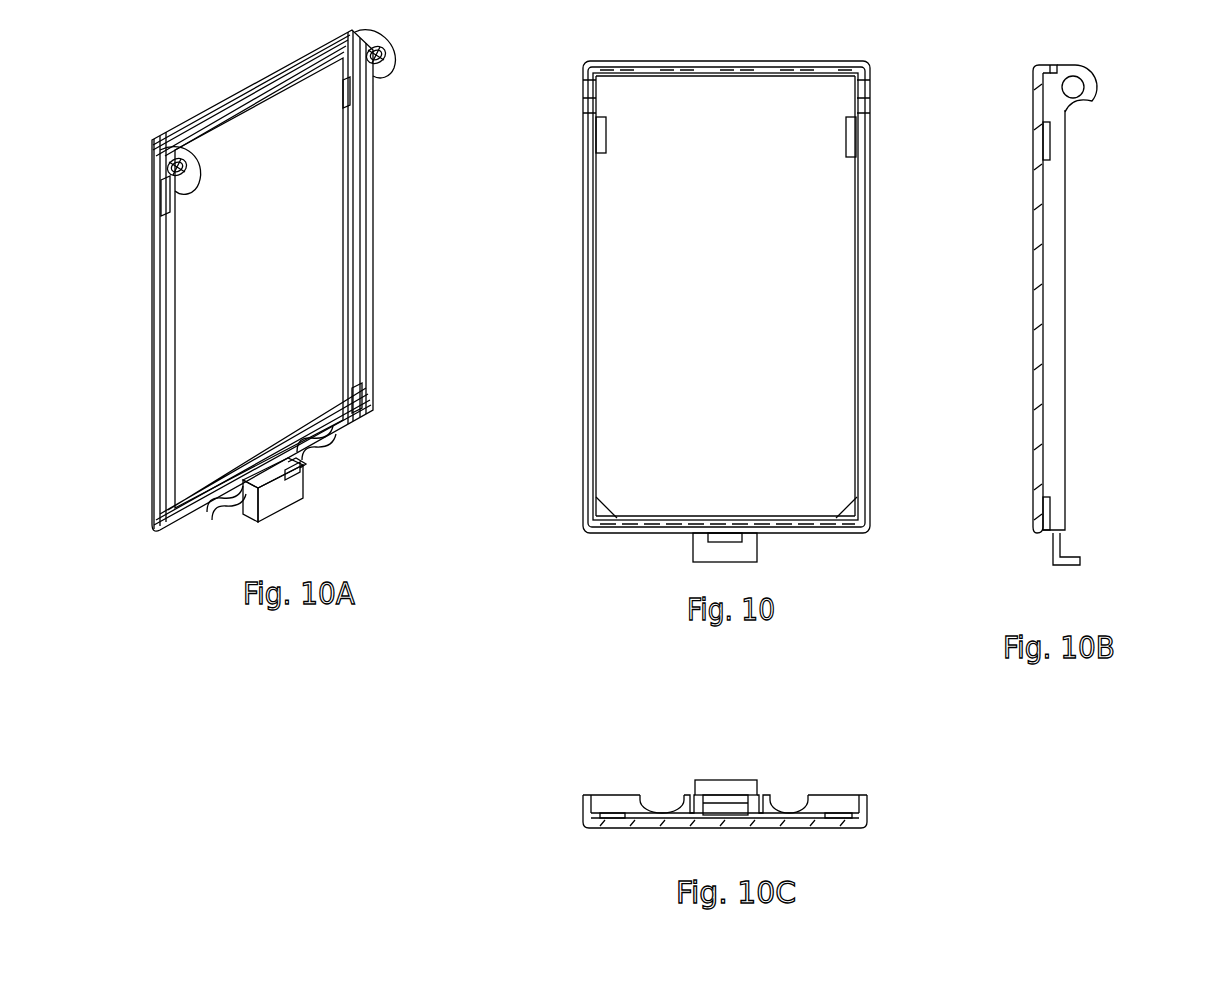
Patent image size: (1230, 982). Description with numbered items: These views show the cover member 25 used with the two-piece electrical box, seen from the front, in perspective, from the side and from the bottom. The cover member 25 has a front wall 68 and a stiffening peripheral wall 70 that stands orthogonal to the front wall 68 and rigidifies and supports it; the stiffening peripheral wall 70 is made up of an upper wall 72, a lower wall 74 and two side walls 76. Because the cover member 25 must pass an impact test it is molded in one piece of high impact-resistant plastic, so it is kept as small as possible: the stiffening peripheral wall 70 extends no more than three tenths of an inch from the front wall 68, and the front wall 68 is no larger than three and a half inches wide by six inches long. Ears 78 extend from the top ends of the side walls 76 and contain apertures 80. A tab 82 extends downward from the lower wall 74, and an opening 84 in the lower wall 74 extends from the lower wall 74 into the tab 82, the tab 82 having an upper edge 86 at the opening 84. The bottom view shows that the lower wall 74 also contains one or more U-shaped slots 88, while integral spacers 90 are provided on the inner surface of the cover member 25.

In FIG. 10A, the cover member 25 is at (124, 293).
In FIG. 10, the cover member 25 is at (547, 303).
In FIG. 10B, the cover member 25 is at (1007, 319).
In FIG. 10C, the cover member 25 is at (746, 744).
In FIG. 10, the front wall 68 is at (705, 279).
In FIG. 10B, the front wall 68 is at (1040, 196).
In FIG. 10C, the front wall 68 is at (660, 822).
In FIG. 10A, the stiffening peripheral wall 70 is at (160, 392).
In FIG. 10, the stiffening peripheral wall 70 is at (871, 240).
In FIG. 10A, the upper wall 72 is at (272, 82).
In FIG. 10B, the upper wall 72 is at (1049, 68).
In FIG. 10A, the lower wall 74 is at (192, 520).
In FIG. 10B, the lower wall 74 is at (1055, 545).
In FIG. 10C, the lower wall 74 is at (820, 806).
In FIG. 10B, the side walls 76 is at (1053, 277).
In FIG. 10C, the side walls 76 is at (583, 812).
In FIG. 10A, the ears 78 is at (382, 78).
In FIG. 10B, the ears 78 is at (1098, 90).
In FIG. 10A, the apertures 80 is at (393, 52).
In FIG. 10B, the apertures 80 is at (1074, 88).
In FIG. 10A, the tab 82 is at (270, 490).
In FIG. 10, the tab 82 is at (702, 555).
In FIG. 10C, the tab 82 is at (726, 797).
In FIG. 10A, the opening 84 is at (297, 470).
In FIG. 10, the opening 84 is at (742, 538).
In FIG. 10, the upper edge 86 is at (722, 532).
In FIG. 10C, the U-shaped slots 88 is at (662, 812).
In FIG. 10A, the integral spacers 90 is at (343, 95).
In FIG. 10, the integral spacers 90 is at (726, 137).